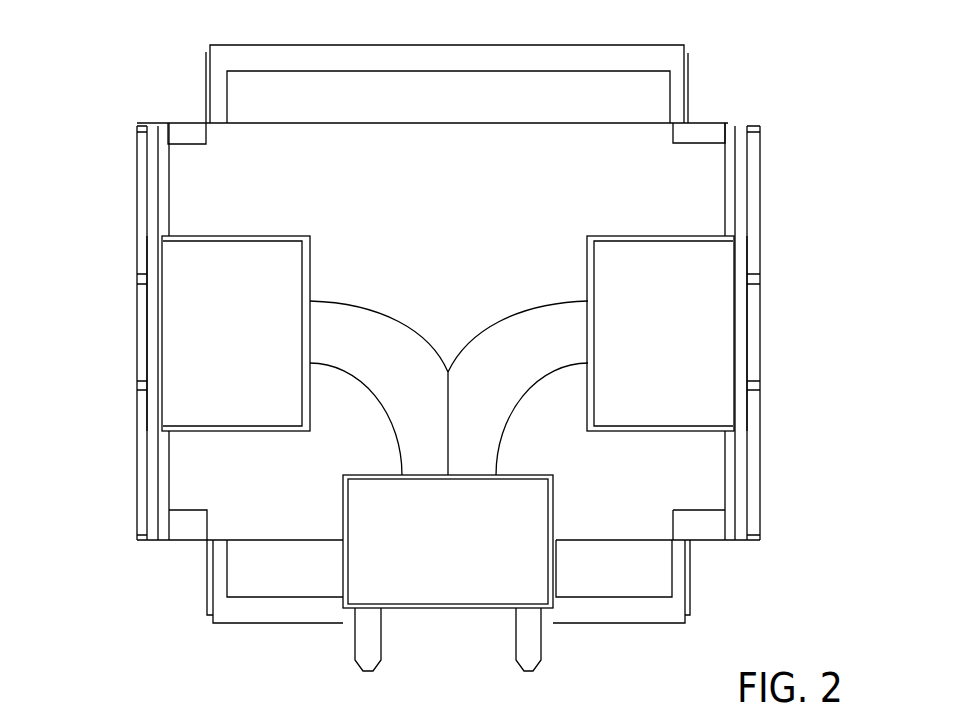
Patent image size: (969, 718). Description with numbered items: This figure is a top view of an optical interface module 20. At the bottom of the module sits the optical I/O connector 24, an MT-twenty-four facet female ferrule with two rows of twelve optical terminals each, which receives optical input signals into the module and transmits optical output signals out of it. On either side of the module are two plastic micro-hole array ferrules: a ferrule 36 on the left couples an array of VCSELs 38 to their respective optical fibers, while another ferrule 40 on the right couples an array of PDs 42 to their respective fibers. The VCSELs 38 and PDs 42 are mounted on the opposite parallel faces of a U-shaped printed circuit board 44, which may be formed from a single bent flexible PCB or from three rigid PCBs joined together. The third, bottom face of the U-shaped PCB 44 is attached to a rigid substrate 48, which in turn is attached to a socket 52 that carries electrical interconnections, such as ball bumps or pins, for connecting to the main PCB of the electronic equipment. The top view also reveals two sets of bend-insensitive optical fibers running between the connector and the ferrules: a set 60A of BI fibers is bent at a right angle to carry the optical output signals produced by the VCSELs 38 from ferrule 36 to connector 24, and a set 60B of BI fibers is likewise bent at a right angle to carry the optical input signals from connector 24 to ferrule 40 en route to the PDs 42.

The optical interface module 20 is at (121, 59).
The optical I/O connector 24 is at (453, 596).
The ferrule 36 is at (168, 258).
The VCSELs 38 is at (143, 332).
The ferrule 40 is at (720, 258).
The PDs 42 is at (753, 332).
The U-shaped Printed Circuit Board 44 is at (152, 123).
The rigid substrate 48 is at (273, 623).
The socket 52 is at (207, 590).
The set of BI fibers 60A is at (400, 318).
The set of BI fibers 60B is at (494, 318).